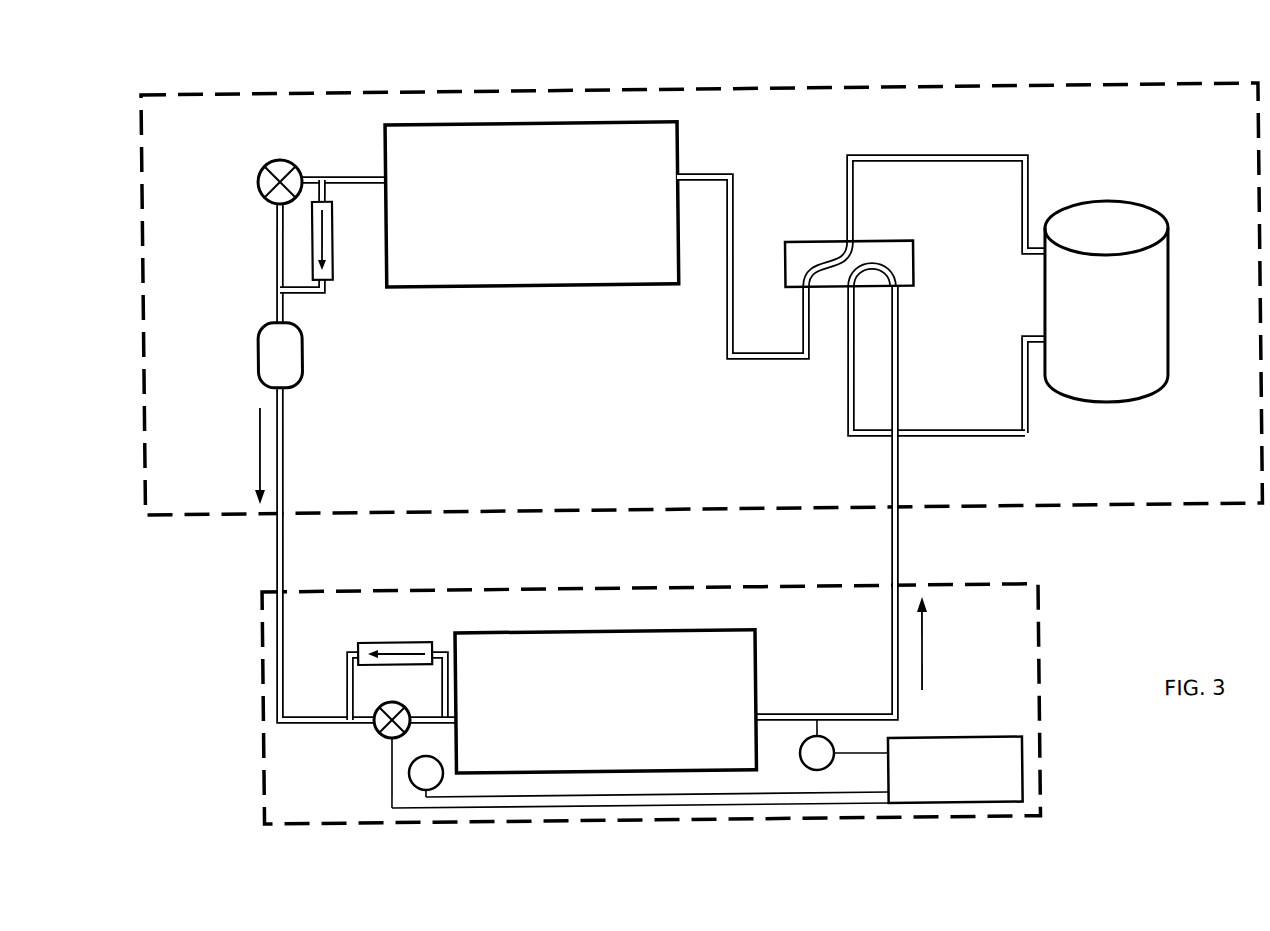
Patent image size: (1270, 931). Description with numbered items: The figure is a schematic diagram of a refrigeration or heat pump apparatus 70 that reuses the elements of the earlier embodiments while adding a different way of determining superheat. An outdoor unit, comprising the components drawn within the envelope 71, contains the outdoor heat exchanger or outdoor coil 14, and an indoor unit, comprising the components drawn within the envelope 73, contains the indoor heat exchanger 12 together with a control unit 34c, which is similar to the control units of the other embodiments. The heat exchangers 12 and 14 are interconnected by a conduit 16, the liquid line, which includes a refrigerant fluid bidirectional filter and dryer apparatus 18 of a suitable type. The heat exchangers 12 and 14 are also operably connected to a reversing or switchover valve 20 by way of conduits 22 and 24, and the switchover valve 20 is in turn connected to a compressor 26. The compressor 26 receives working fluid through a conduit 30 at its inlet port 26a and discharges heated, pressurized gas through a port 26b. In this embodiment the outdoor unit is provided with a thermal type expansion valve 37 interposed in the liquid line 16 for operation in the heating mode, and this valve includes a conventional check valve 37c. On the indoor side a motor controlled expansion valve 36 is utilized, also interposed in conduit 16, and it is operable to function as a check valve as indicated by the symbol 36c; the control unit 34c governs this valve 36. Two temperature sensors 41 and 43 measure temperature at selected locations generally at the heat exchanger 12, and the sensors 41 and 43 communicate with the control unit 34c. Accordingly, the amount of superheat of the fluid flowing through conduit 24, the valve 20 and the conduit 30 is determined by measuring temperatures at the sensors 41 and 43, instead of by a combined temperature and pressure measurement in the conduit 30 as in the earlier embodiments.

The heat exchanger 12 is at (571, 637).
The heat exchanger 14 is at (501, 294).
The conduit 16 is at (282, 430).
The bidirectional filter and dryer apparatus 18 is at (255, 363).
The switchover valve 20 is at (892, 250).
The conduit 22 is at (710, 176).
The conduit 24 is at (886, 487).
The compressor 26 is at (1105, 210).
The inlet port 26a is at (1032, 345).
The port 26b is at (1031, 265).
The working fluid conduit 30 is at (987, 447).
The control unit 34c is at (971, 747).
The expansion valve 36 is at (367, 736).
The check valve symbol 36c is at (381, 645).
The thermal type expansion valve 37 is at (281, 162).
The check valve 37c is at (331, 267).
The temperature sensor 41 is at (793, 742).
The temperature sensor 43 is at (401, 781).
The apparatus 70 is at (778, 85).
The envelope 71 is at (500, 94).
The envelope 73 is at (390, 829).